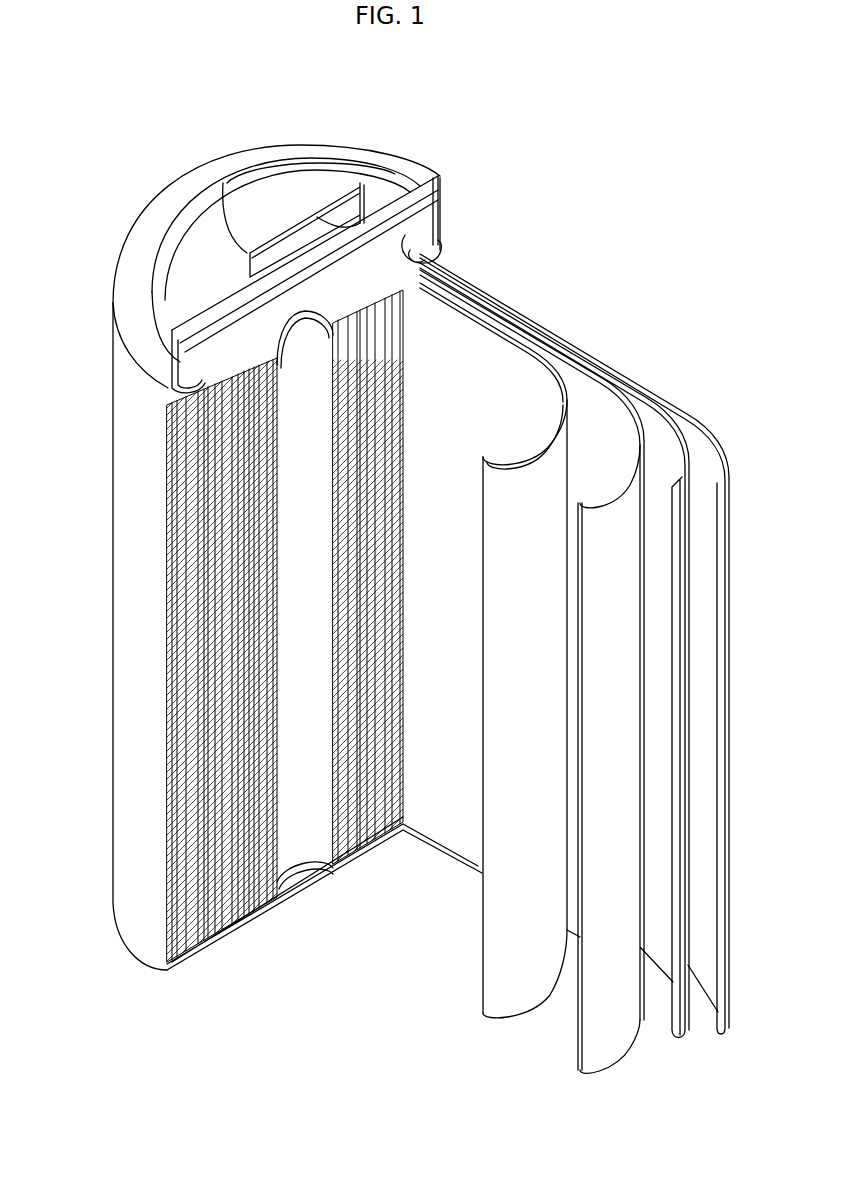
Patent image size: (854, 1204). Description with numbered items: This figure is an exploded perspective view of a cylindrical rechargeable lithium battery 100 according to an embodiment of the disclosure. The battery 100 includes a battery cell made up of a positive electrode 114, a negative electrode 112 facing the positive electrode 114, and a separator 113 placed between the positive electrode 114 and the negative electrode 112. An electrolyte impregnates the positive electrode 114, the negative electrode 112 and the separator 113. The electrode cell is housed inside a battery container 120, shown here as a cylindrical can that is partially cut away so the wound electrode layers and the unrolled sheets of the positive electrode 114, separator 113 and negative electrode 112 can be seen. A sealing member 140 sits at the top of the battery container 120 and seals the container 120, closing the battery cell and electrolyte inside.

The rechargeable lithium battery 100 is at (439, 130).
The negative electrode 112 is at (690, 413).
The separator 113 is at (487, 322).
The positive electrode 114 is at (585, 380).
The battery container 120 is at (113, 602).
The sealing member 140 is at (262, 192).